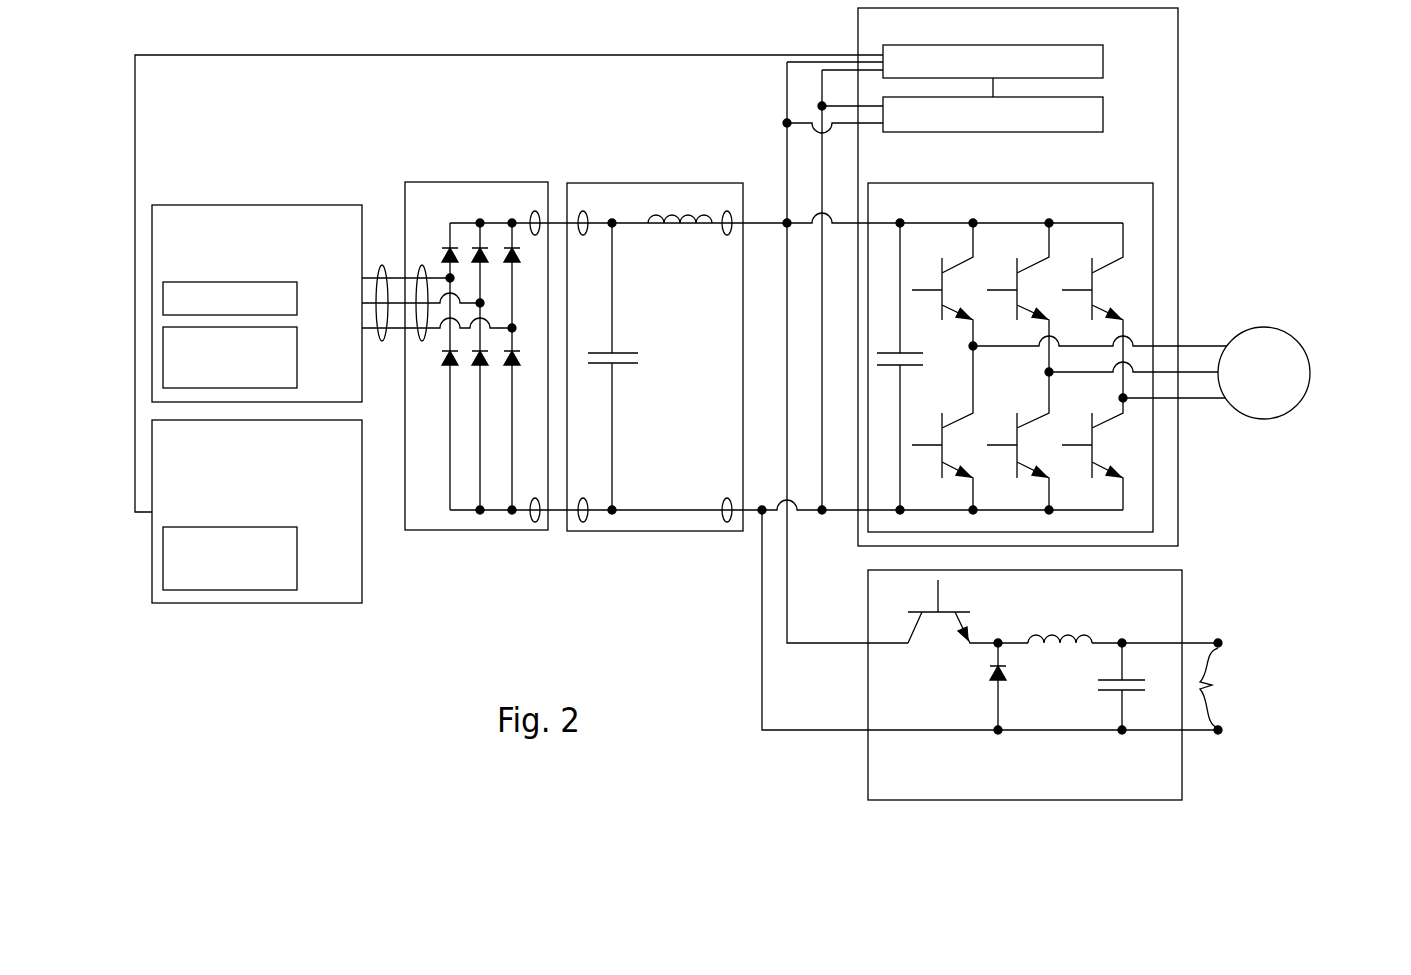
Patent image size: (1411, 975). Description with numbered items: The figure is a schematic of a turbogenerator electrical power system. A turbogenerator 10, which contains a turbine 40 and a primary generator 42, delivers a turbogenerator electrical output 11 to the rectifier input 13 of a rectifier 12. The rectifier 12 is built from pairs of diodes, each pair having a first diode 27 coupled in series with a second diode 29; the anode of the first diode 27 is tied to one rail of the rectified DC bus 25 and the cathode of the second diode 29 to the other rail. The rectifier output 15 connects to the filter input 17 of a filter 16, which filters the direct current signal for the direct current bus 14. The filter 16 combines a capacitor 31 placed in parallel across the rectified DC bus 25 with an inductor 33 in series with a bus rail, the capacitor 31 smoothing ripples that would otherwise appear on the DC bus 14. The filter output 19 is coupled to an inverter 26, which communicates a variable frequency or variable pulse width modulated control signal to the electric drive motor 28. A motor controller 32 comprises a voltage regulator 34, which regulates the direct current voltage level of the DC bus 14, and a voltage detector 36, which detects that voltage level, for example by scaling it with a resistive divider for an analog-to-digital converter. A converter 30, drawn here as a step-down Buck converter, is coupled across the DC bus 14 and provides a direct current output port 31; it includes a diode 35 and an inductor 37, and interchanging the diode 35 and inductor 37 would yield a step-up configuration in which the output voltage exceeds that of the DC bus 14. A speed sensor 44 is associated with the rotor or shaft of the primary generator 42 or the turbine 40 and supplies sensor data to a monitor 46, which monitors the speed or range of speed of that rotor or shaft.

The turbogenerator 10 is at (297, 205).
The turbogenerator electrical output 11 is at (382, 345).
The rectifier 12 is at (487, 182).
The rectifier input 13 is at (422, 343).
The direct current (DC) bus 14 is at (786, 223).
The rectifier output 15 is at (535, 211).
The filter 16 is at (606, 183).
The filter input 17 is at (581, 211).
The filter output 19 is at (727, 211).
The rectified DC bus 25 is at (445, 220).
The inverter 26 is at (1047, 183).
The first diode 27 is at (450, 366).
The electric drive motor 28 is at (1265, 325).
The second diode 29 is at (440, 250).
The converter 30 is at (1182, 620).
The capacitor 31 is at (625, 352).
The motor controller 32 is at (1180, 42).
The filter inductor 33 is at (660, 232).
The voltage regulator 34 is at (1105, 62).
The diode 35 is at (993, 674).
The voltage detector 36 is at (1105, 117).
The inductor 37 is at (1060, 635).
The turbine 40 is at (297, 303).
The primary generator 42 is at (297, 357).
The speed sensor 44 is at (297, 560).
The monitor 46 is at (255, 603).